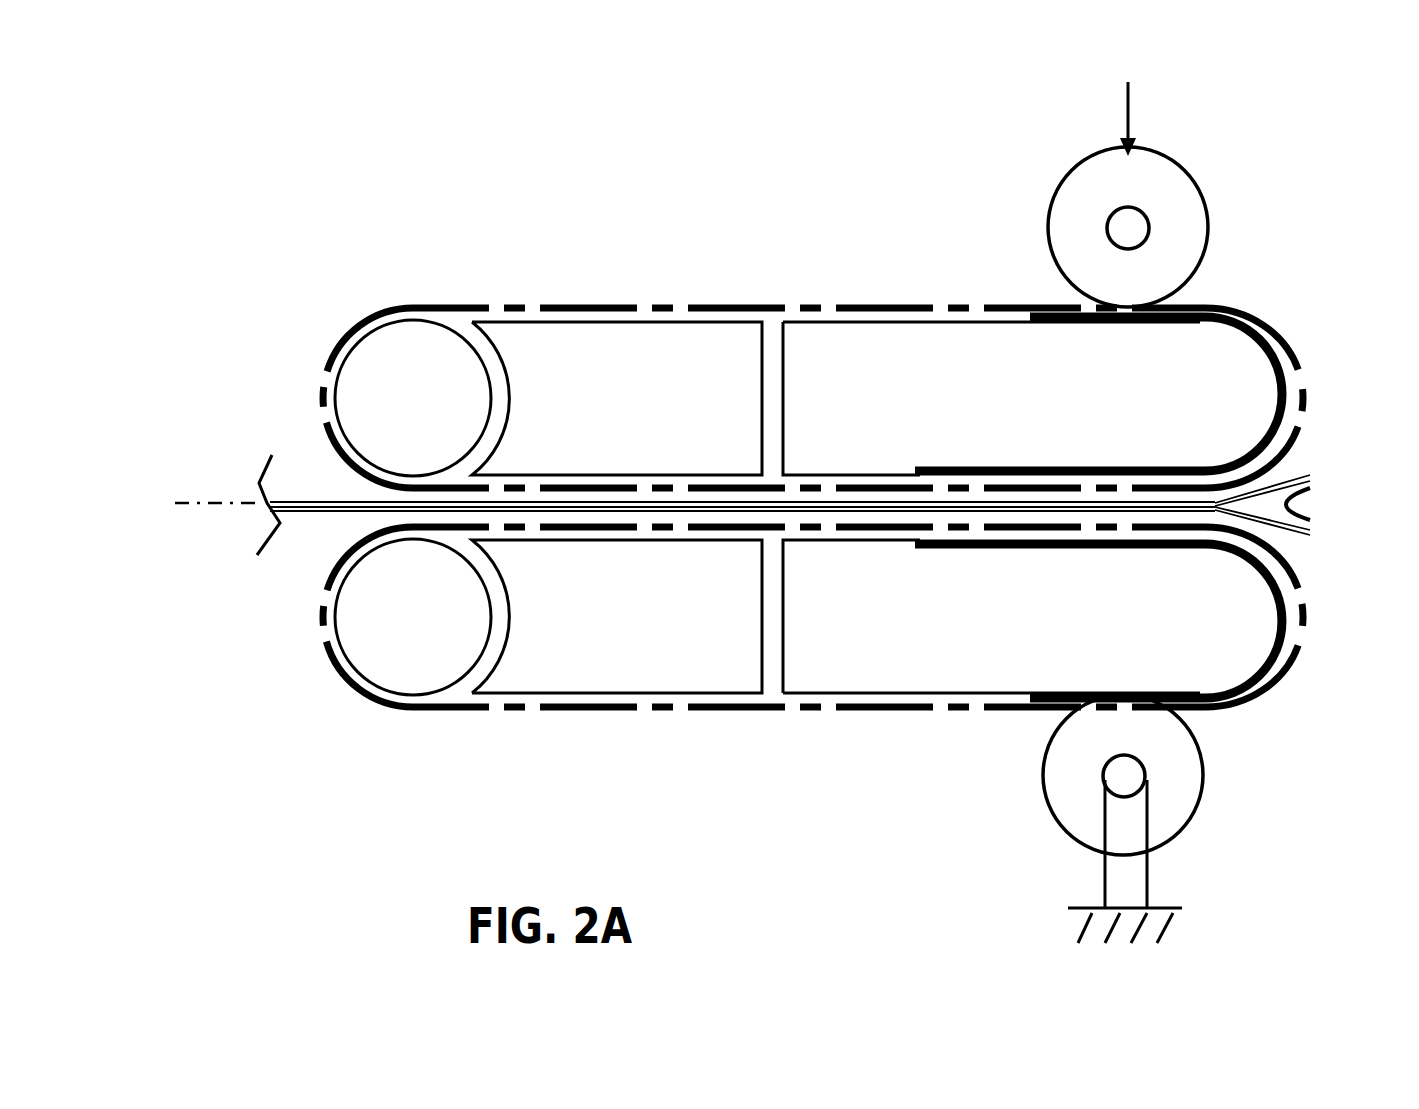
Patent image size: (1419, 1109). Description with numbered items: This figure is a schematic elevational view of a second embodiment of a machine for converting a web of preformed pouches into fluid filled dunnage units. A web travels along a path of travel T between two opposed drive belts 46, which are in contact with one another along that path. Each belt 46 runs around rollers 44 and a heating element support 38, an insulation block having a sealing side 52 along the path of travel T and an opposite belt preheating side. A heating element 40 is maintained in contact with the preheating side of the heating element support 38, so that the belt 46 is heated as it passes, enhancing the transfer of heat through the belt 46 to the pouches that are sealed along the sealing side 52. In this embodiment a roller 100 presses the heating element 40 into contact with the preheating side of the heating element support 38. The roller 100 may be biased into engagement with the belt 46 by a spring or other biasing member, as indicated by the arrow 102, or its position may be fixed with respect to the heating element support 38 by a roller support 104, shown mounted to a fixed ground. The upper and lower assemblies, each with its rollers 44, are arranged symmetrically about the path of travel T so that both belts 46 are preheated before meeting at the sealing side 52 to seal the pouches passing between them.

The path of travel T is at (235, 502).
The heating element support 38 is at (1230, 362).
The heating element 40 is at (1228, 307).
The roller 44 is at (412, 396).
The drive belt 46 is at (867, 300).
The sealing side 52 is at (975, 455).
The roller 100 is at (1092, 228).
The arrow 102 is at (1127, 120).
The roller support 104 is at (1085, 928).